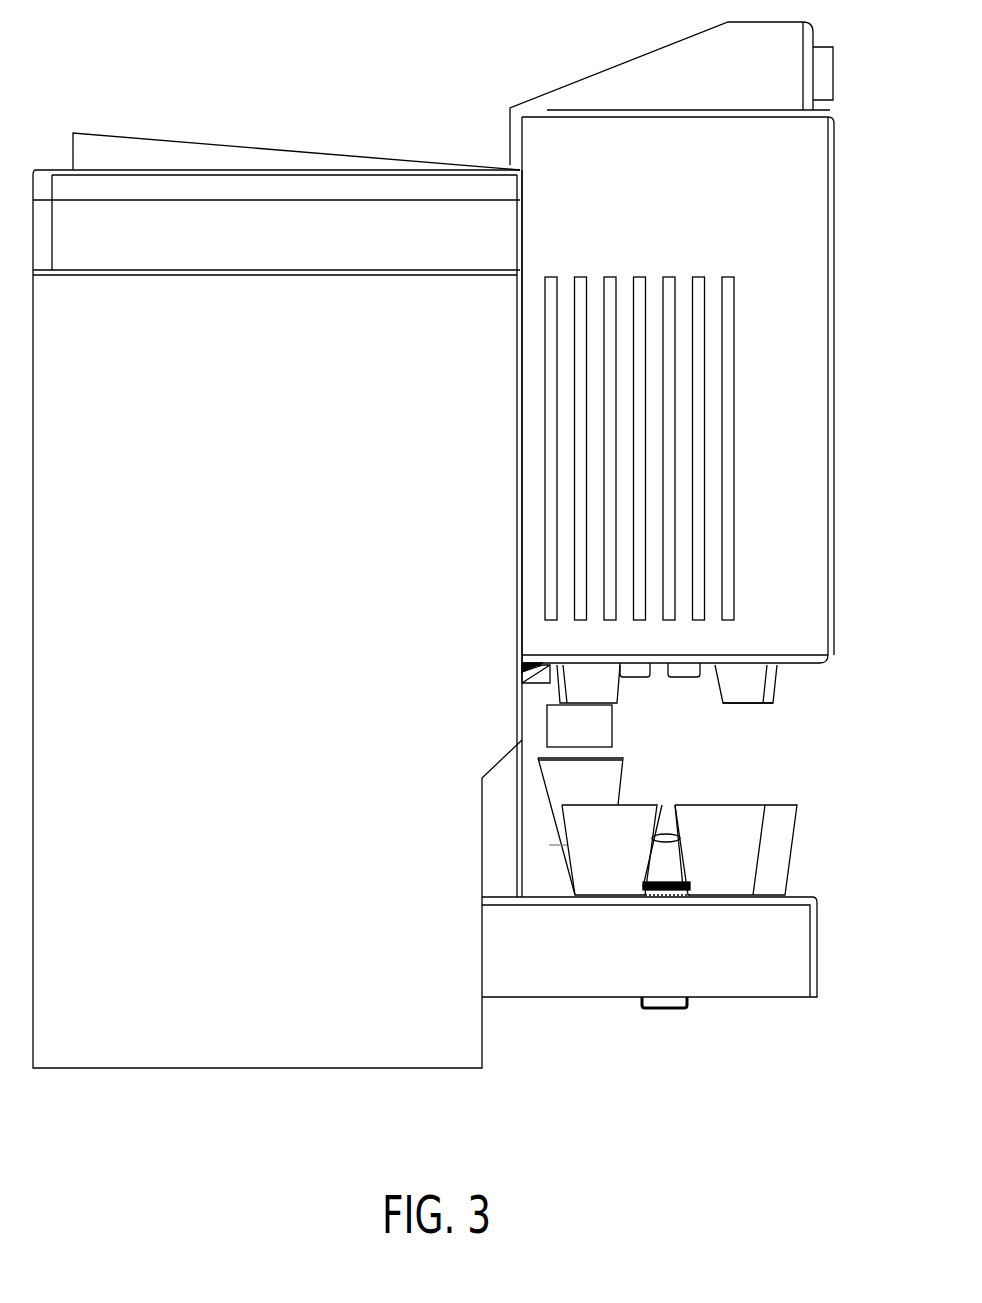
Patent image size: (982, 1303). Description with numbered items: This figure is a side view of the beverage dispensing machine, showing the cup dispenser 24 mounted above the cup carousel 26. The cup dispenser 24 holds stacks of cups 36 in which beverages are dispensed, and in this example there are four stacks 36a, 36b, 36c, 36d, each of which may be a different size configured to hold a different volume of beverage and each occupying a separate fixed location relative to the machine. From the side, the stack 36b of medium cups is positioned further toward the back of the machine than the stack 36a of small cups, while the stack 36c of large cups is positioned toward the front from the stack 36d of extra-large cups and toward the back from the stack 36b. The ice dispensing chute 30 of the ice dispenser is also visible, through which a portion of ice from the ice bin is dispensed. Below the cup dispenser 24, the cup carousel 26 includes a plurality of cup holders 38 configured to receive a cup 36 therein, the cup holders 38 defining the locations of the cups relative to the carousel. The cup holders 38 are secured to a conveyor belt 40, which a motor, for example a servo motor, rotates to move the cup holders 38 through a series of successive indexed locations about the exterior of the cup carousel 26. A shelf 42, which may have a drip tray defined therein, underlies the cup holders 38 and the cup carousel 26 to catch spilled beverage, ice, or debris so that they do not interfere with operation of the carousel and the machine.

The cup dispenser 24 is at (890, 287).
The cup carousel 26 is at (662, 857).
The ice dispensing chute 30 is at (560, 726).
The cup 36 is at (550, 783).
The stack of small cups 36a is at (772, 690).
The stack of medium cups 36b is at (726, 703).
The stack of large cups 36c is at (617, 690).
The stack of extra-large cups 36d is at (562, 690).
The cup holder 38 is at (578, 882).
The conveyor belt 40 is at (663, 833).
The shelf 42 is at (805, 897).